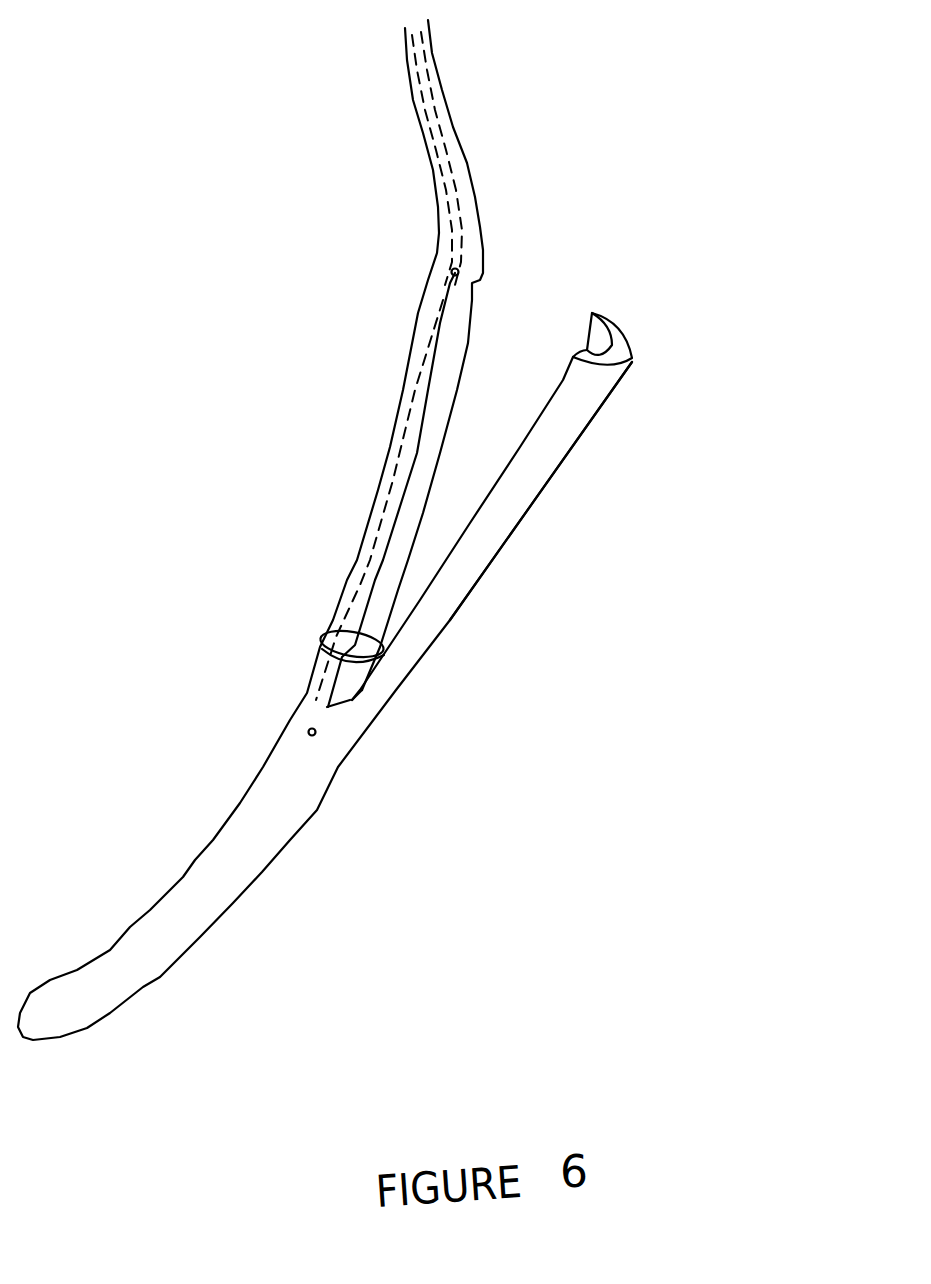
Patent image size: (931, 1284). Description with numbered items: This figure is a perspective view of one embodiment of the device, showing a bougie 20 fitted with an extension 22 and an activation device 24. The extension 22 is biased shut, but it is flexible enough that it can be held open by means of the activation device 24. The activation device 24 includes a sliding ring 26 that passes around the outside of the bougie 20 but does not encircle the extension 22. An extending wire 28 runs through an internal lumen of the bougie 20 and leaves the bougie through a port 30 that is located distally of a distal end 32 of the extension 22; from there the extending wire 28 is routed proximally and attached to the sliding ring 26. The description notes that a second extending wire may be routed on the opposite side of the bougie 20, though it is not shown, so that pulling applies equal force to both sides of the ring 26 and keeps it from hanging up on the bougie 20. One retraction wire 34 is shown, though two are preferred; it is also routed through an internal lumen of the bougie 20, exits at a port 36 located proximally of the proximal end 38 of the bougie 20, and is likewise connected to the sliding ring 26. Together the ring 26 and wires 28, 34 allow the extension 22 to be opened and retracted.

The bougie 20 is at (427, 530).
The extension 22 is at (633, 360).
The activation device 24 is at (255, 650).
The sliding ring 26 is at (323, 633).
The extending wire 28 is at (327, 707).
The port 30 is at (312, 732).
The distal end 32 is at (367, 712).
The retraction wire 34 is at (400, 492).
The port 36 is at (455, 272).
The proximal end 38 is at (472, 283).